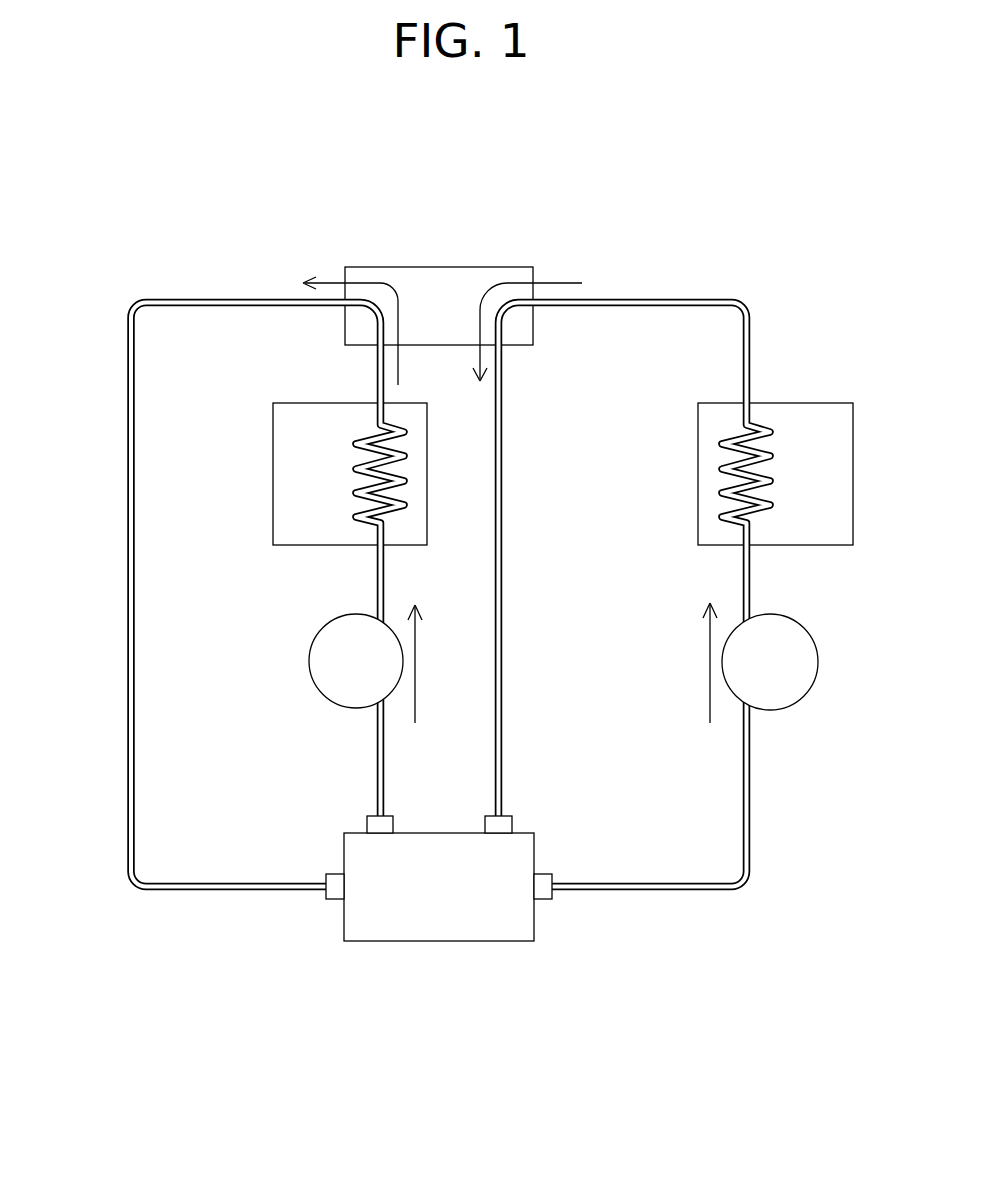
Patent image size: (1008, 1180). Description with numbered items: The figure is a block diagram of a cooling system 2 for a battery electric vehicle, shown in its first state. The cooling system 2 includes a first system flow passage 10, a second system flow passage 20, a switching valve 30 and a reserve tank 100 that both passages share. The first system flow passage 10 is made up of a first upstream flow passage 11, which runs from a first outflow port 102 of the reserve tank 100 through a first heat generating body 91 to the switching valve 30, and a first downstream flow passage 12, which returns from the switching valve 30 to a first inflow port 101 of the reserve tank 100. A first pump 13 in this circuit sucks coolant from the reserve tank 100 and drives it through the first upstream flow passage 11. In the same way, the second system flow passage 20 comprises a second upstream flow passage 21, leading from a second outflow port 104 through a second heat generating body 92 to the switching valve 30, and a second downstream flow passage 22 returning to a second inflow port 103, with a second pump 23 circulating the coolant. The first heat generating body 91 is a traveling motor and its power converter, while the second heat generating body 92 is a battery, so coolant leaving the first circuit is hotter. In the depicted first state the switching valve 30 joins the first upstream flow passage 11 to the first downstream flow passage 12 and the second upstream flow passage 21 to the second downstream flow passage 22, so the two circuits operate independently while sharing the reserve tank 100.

The cooling system 2 is at (127, 210).
The switching valve 30 is at (505, 267).
The first system flow passage 10 is at (635, 595).
The first upstream flow passage 11 is at (563, 307).
The first downstream flow passage 12 is at (503, 403).
The first pump 13 is at (795, 617).
The second system flow passage 20 is at (267, 595).
The second upstream flow passage 21 is at (377, 383).
The second downstream flow passage 22 is at (320, 307).
The second pump 23 is at (332, 620).
The first heat generating body 91 is at (797, 403).
The second heat generating body 92 is at (273, 473).
The reserve tank 100 is at (460, 941).
The first inflow port 101 is at (512, 823).
The first outflow port 102 is at (543, 902).
The second inflow port 103 is at (333, 900).
The second outflow port 104 is at (368, 823).